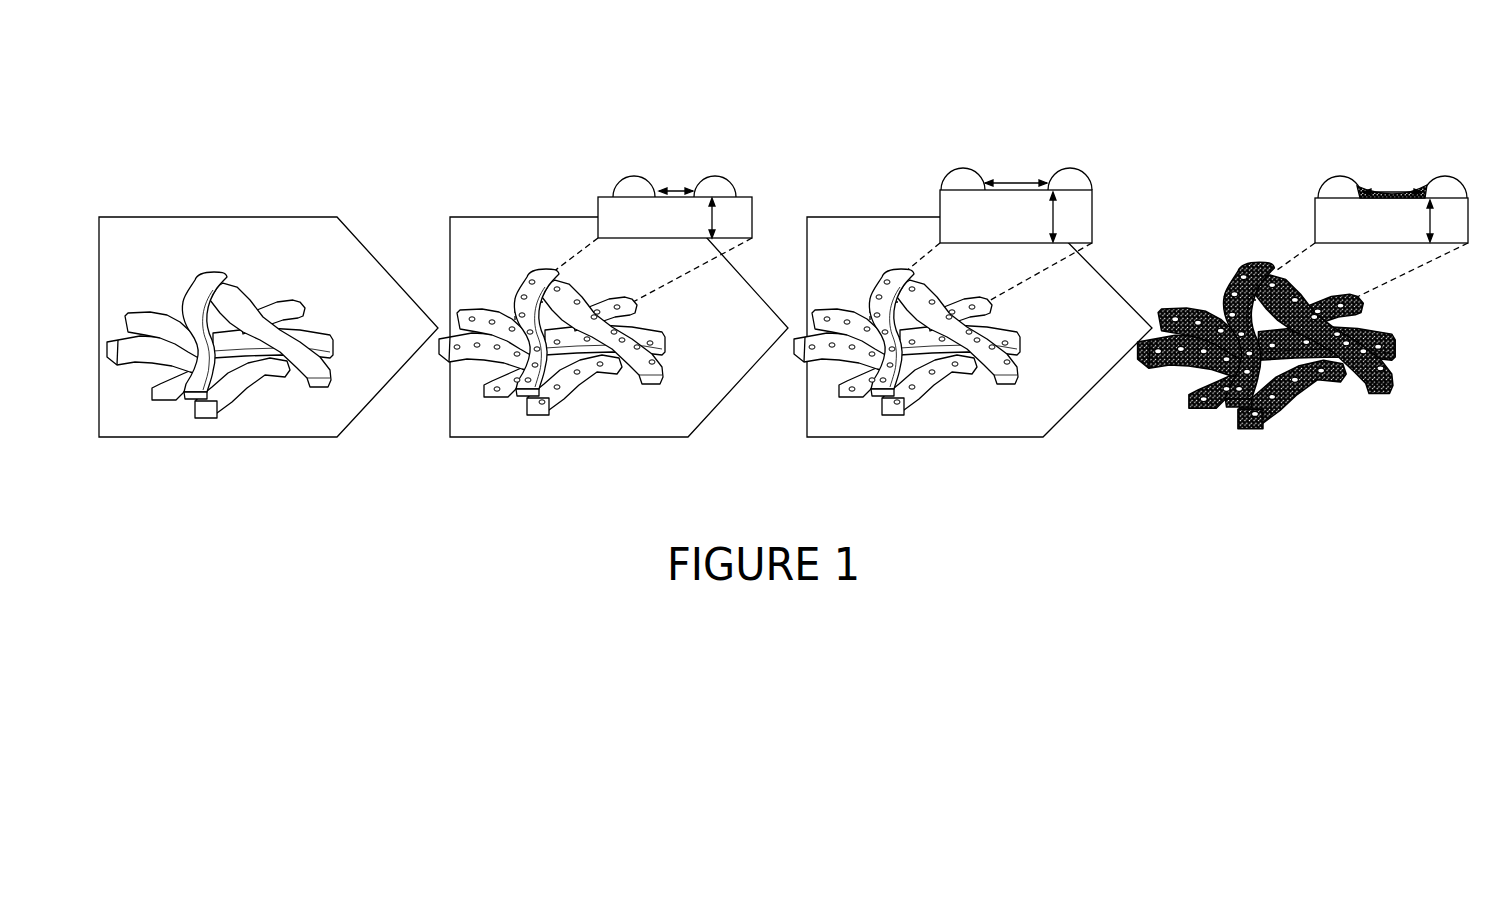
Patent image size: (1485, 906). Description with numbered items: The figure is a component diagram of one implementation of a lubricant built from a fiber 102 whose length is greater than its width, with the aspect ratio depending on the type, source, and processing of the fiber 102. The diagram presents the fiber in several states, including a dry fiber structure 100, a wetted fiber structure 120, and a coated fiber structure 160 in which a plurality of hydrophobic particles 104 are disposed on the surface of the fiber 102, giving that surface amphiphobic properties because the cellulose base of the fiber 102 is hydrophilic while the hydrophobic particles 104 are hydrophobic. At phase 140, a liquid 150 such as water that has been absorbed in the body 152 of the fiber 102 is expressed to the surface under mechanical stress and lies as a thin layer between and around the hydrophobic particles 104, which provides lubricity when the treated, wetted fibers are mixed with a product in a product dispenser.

The dry fiber structure 100 is at (292, 143).
The fiber 102 is at (210, 412).
The hydrophobic particles 104 is at (716, 183).
The wetted fiber structure 120 is at (663, 103).
The phase 140 is at (983, 105).
The liquid 150 is at (1027, 227).
The body 152 is at (1083, 206).
The coated fiber structure 160 is at (1391, 118).